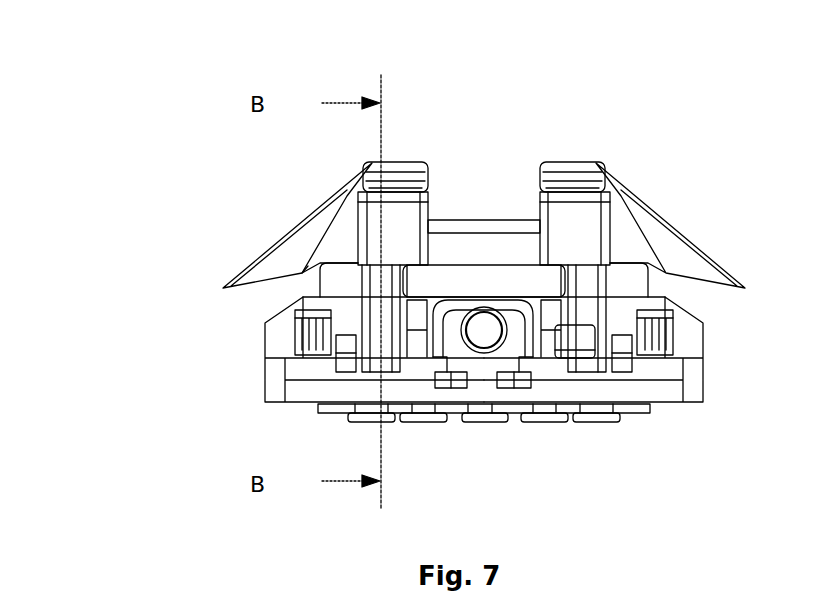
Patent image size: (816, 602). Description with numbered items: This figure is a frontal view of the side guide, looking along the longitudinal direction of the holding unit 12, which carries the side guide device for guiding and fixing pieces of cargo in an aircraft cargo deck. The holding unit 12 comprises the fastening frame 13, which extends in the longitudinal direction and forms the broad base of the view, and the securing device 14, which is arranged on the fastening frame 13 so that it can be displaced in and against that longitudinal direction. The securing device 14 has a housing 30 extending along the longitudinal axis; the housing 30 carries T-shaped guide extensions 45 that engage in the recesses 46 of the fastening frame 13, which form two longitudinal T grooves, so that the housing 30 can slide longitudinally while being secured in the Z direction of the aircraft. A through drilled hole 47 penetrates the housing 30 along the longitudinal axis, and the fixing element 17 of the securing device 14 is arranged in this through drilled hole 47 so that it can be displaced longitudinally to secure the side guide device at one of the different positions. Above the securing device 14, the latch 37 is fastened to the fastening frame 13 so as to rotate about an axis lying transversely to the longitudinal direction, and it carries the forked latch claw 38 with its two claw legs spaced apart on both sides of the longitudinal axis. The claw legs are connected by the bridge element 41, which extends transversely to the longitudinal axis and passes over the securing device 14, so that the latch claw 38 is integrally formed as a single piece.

The holding unit 12 is at (150, 91).
The fastening frame 13 is at (262, 380).
The securing device 14 is at (527, 372).
The fixing element 17 is at (452, 380).
The housing 30 is at (572, 362).
The latch 37 is at (612, 130).
The latch claw 38 is at (552, 160).
The bridge element 41 is at (490, 232).
The guide extensions 45 is at (466, 375).
The recesses 46 is at (497, 378).
The through drilled hole 47 is at (513, 298).